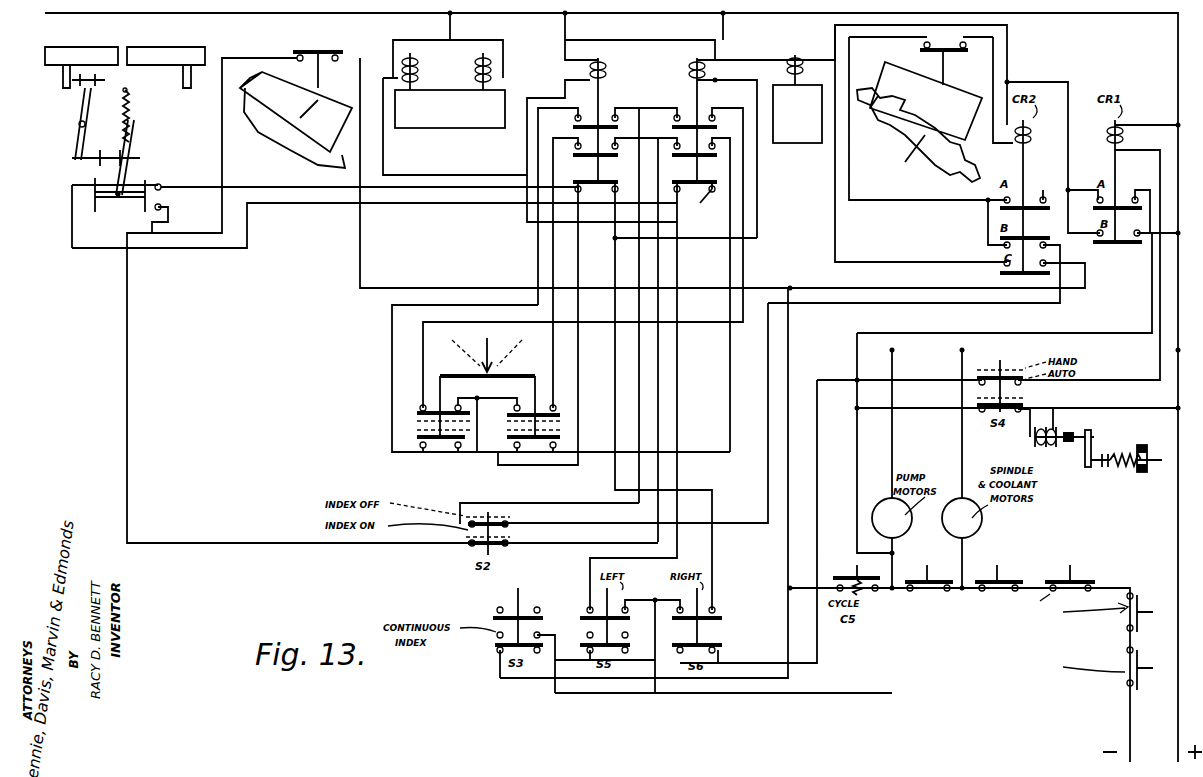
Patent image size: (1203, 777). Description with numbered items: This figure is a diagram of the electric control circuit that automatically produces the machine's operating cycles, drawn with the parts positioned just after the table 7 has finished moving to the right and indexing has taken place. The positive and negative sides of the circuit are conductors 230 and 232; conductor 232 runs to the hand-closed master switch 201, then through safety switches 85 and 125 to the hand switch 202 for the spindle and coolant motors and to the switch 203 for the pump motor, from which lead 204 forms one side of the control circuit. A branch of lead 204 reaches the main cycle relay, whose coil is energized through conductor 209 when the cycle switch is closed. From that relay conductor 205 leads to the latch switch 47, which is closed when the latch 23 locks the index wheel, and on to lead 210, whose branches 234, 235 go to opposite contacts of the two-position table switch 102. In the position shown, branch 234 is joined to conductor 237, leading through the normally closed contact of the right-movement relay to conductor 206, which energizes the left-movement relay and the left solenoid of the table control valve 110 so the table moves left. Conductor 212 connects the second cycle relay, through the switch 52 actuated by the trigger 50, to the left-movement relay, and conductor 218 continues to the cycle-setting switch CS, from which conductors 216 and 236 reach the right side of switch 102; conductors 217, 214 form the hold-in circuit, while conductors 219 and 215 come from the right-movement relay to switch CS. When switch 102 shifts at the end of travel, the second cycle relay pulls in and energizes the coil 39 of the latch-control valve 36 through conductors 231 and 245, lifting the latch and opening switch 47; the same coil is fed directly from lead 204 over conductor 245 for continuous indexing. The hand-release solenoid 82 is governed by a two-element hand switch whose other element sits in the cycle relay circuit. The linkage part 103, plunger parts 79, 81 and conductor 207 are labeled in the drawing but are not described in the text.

The table 7 is at (158, 66).
The latch 23 is at (296, 125).
The latch-control valve 36 is at (790, 143).
The coil 39 is at (782, 62).
The latch switch 47 is at (328, 50).
The trigger 50 is at (928, 118).
The trigger switch 52 is at (920, 50).
The plunger rod and spring 79 is at (1152, 472).
The plunger 81 is at (1075, 437).
The solenoid 82 is at (1033, 440).
The safety switch 85 is at (1135, 624).
The table switch 102 is at (130, 172).
The table feed link 103 is at (130, 138).
The table control valve 110 is at (420, 130).
The safety switch 125 is at (1090, 562).
The master switch 201 is at (1125, 685).
The second hand switch 202 is at (1012, 560).
The switch 203 is at (940, 560).
The lead 204 is at (1150, 282).
The conductor 205 is at (408, 262).
The conductor 206 is at (527, 150).
The conductor 207 is at (513, 62).
The conductor 209 is at (735, 630).
The lead 210 is at (282, 56).
The conductor 212 is at (633, 112).
The conductor 214 is at (566, 136).
The conductor 215 is at (732, 370).
The conductor 216 is at (578, 352).
The conductor 217 is at (480, 428).
The conductor 218 is at (538, 262).
The conductor 219 is at (762, 180).
The conductor 230 is at (1176, 68).
The conductor 231 is at (838, 235).
The conductor 232 is at (1128, 722).
The lead 234 is at (120, 216).
The lead 235 is at (168, 218).
The conductor 236 is at (236, 186).
The conductor 237 is at (72, 217).
The conductor 245 is at (1010, 60).